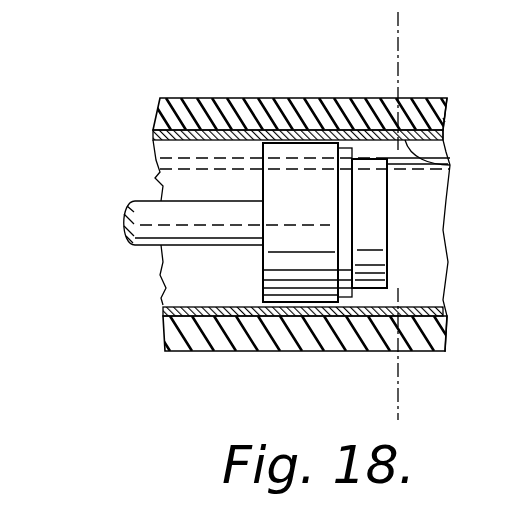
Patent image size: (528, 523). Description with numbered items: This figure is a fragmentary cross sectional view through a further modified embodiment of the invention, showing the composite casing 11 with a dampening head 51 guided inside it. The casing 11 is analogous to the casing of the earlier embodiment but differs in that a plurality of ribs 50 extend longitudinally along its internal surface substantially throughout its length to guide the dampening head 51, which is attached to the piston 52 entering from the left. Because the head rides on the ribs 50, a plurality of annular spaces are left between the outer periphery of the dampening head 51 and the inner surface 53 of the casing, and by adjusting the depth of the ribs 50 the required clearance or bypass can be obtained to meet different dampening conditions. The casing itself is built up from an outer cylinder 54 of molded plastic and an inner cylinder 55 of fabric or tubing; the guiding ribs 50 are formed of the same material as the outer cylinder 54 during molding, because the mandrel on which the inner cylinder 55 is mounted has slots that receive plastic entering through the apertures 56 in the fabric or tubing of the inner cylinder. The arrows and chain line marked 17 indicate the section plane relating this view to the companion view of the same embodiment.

The composite casing 11 is at (203, 97).
The section line 17 is at (337, 42).
The ribs 50 is at (180, 153).
The dampening head 51 is at (272, 257).
The piston 52 is at (122, 210).
The inner surface 53 is at (405, 170).
The outer cylinder 54 is at (443, 120).
The inner cylinder 55 is at (405, 150).
The apertures 56 is at (253, 55).